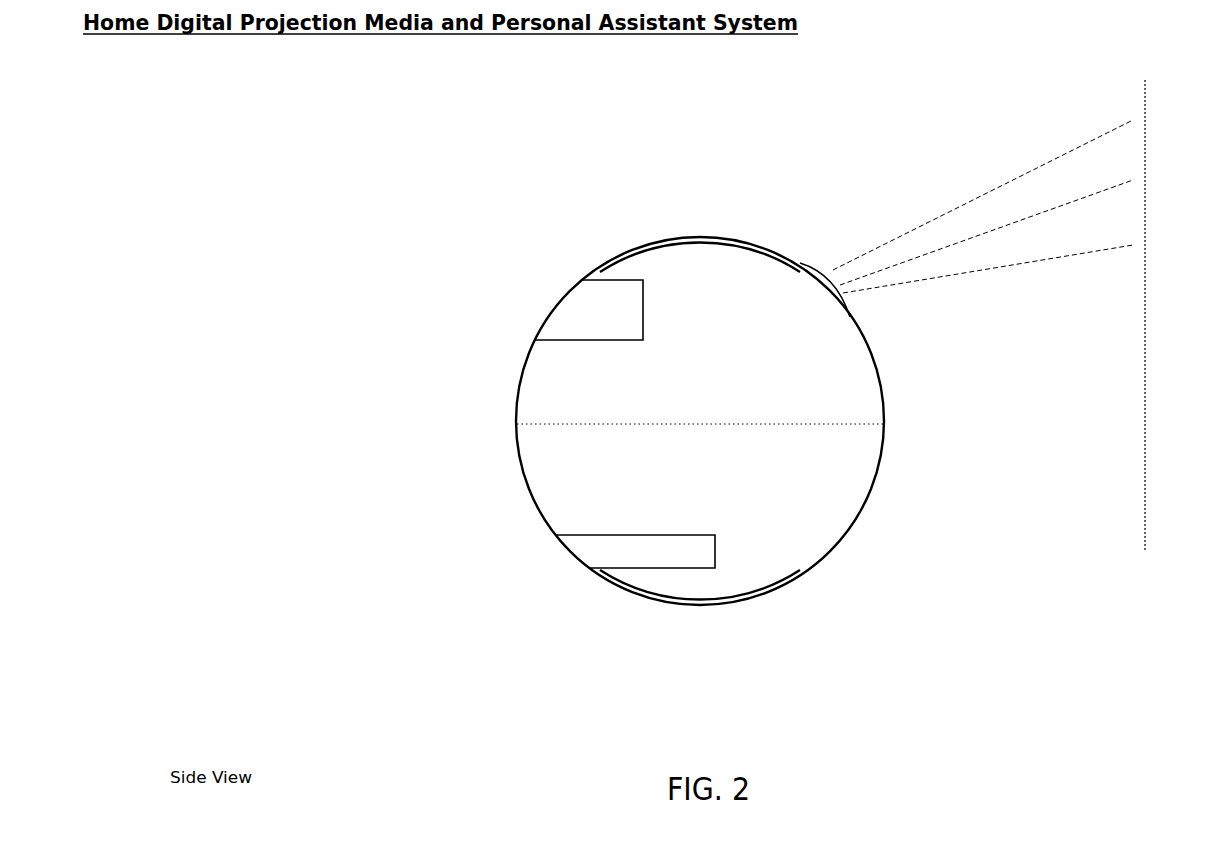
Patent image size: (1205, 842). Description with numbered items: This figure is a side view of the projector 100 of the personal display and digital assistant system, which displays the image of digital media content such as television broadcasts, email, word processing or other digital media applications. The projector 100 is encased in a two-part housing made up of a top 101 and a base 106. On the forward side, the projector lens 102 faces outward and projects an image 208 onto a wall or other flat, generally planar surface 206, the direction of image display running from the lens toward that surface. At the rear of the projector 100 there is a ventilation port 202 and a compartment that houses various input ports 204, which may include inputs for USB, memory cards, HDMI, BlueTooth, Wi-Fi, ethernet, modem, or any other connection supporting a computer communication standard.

The projector 100 is at (873, 77).
The top 101 is at (700, 195).
The projector lens 102 is at (848, 313).
The base 106 is at (668, 652).
The ventilation port 202 is at (585, 300).
The various input ports 204 is at (613, 540).
The wall or other flat surface 206 is at (1140, 445).
The image 208 is at (937, 206).